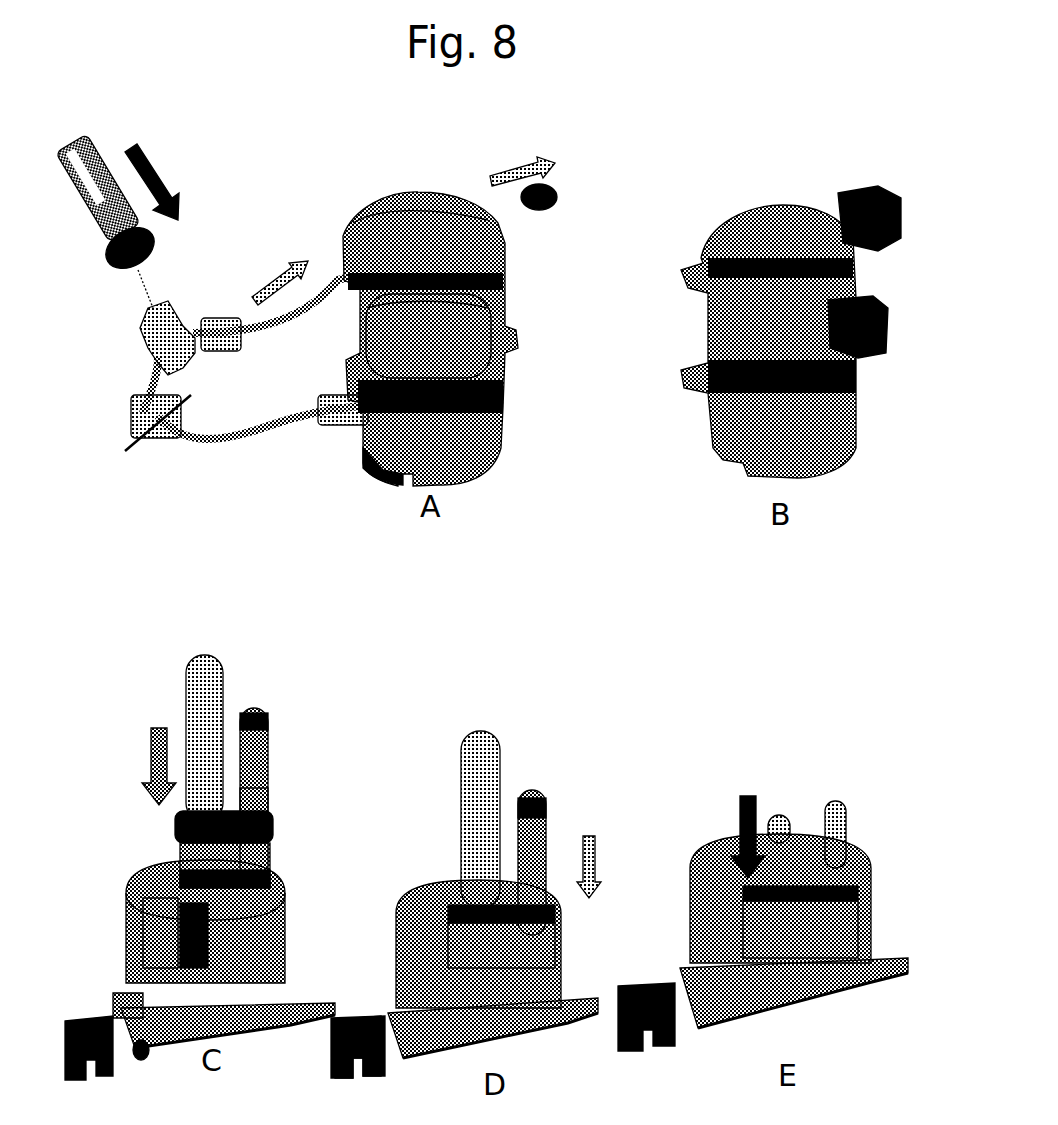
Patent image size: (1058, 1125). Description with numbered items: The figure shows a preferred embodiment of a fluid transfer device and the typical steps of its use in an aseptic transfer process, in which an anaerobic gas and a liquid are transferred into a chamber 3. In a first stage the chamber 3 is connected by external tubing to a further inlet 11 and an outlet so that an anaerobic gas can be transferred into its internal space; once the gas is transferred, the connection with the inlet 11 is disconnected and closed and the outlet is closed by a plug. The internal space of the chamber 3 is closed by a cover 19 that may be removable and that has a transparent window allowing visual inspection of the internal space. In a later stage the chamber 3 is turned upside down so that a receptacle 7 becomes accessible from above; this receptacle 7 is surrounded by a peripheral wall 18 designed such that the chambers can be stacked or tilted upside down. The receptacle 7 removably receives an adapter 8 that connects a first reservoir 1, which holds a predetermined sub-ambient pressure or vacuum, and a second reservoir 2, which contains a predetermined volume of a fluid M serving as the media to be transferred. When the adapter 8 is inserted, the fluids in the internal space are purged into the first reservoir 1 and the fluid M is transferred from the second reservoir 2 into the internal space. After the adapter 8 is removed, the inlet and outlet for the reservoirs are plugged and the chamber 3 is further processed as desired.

The first reservoir 1 is at (178, 705).
The second reservoir 2 is at (262, 732).
The chamber 3 is at (462, 437).
The receptacle 7 is at (176, 905).
The adapter 8 is at (262, 857).
The inlet 11 is at (370, 453).
The peripheral wall 18 is at (160, 898).
The cover 19 is at (440, 345).
The fluid M is at (250, 800).